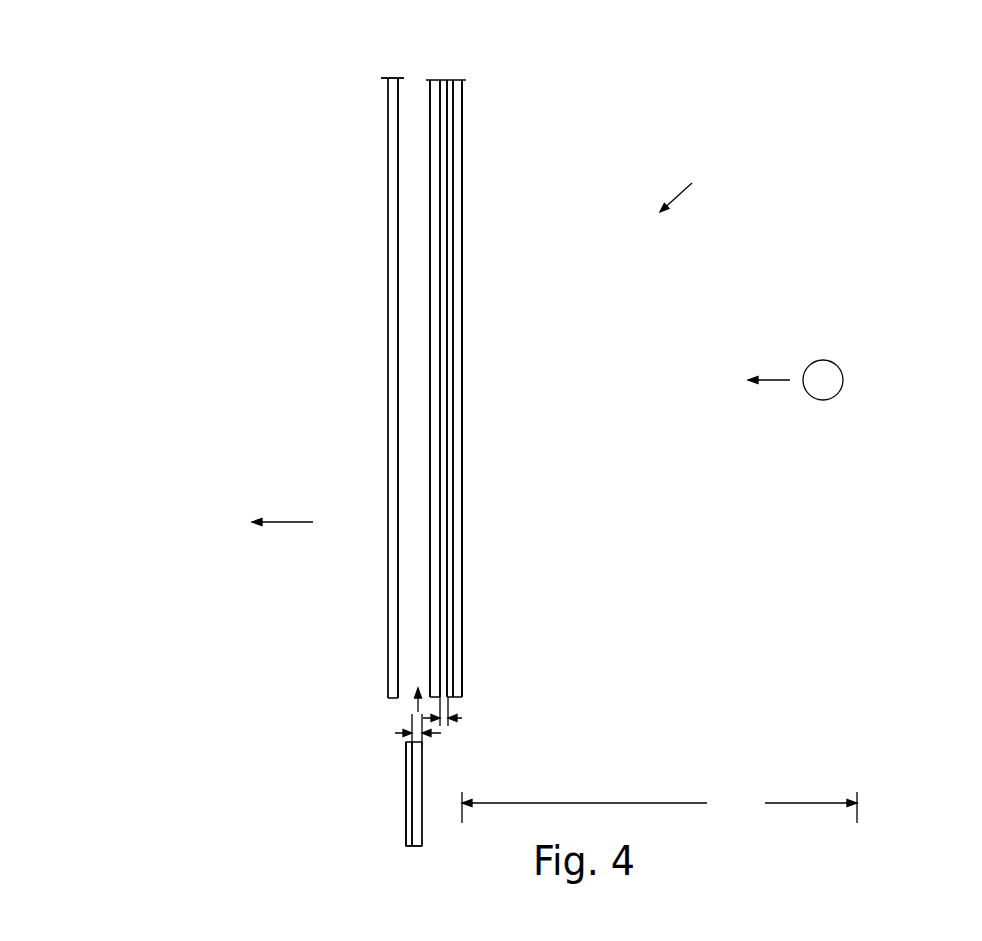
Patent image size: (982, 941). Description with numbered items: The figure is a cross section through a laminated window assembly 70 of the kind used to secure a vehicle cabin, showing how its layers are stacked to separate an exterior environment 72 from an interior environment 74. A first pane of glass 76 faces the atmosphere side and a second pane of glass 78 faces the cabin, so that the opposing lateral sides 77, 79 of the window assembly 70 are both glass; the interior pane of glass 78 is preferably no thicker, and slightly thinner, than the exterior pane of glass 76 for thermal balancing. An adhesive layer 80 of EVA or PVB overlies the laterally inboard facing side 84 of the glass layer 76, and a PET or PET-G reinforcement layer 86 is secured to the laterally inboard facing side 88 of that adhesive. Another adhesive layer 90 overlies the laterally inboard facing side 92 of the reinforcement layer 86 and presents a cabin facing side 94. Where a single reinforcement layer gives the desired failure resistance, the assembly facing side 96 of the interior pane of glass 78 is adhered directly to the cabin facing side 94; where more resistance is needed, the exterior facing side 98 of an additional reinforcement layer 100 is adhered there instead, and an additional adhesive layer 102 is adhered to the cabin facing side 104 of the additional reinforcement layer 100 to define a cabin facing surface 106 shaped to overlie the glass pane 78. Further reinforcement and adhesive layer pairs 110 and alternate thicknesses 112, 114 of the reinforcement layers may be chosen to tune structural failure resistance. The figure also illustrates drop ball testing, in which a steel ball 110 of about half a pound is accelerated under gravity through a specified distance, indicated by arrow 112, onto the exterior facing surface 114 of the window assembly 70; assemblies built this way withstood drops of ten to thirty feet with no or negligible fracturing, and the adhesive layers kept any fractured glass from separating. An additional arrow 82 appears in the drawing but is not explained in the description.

The window assembly 70 is at (692, 188).
The exterior environment 72 is at (686, 302).
The interior environment 74 is at (125, 396).
The first pane of glass 76 is at (457, 543).
The lateral side 77 is at (462, 229).
The second pane of glass 78 is at (394, 626).
The lateral side 79 is at (388, 326).
The adhesive layer 80 is at (455, 79).
The direction arrow 82 is at (290, 522).
The laterally inboard facing side 84 is at (453, 463).
The reinforcement layer 86 is at (438, 79).
The laterally inboard facing side 88 is at (449, 493).
The adhesive layer 90 is at (430, 78).
The laterally inboard facing side 92 is at (440, 517).
The cabin facing side 94 is at (432, 604).
The assembly facing side 96 is at (397, 573).
The exterior facing side 98 is at (423, 778).
The additional reinforcement layer 100 is at (420, 850).
The additional adhesive layer 102 is at (410, 803).
The cabin facing side 104 is at (412, 778).
The cabin facing surface 106 is at (406, 835).
The steel ball 110 is at (830, 370).
The drop distance arrow 112 is at (462, 718).
The exterior facing surface 114 is at (463, 640).